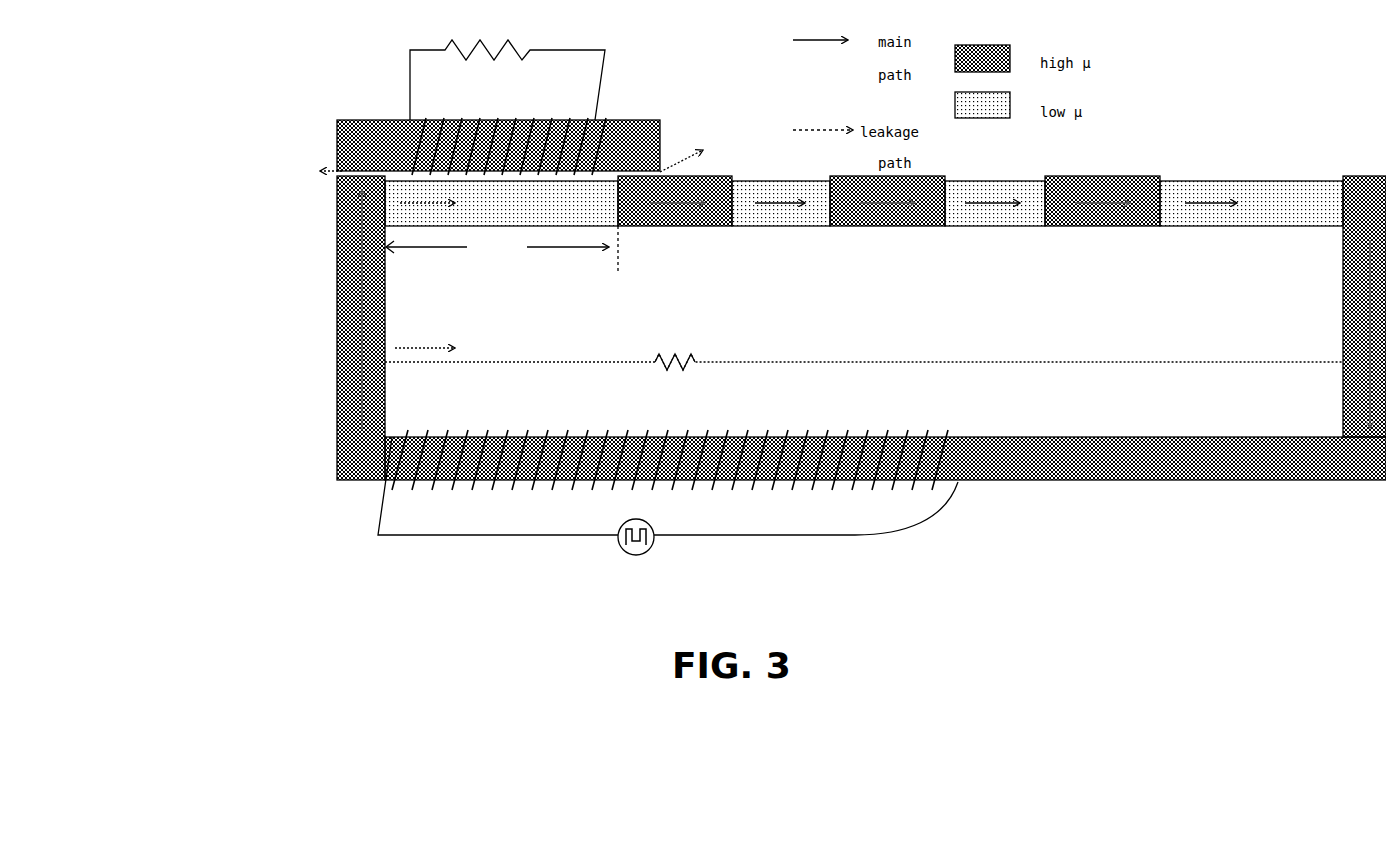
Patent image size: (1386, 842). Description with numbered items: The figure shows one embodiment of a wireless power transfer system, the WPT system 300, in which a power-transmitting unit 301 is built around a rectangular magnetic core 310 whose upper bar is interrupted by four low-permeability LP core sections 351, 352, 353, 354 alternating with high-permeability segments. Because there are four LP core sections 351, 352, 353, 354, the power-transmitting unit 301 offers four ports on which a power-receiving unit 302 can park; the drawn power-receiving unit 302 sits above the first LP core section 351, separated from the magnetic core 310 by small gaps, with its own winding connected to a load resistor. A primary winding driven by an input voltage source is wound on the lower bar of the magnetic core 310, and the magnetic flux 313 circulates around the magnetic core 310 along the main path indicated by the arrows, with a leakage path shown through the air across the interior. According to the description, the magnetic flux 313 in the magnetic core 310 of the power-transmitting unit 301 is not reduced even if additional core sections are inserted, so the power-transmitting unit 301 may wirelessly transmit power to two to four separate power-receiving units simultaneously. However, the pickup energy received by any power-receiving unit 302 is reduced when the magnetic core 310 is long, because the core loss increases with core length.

The WPT system 300 is at (188, 92).
The power-transmitting unit 301 is at (283, 182).
The power-receiving unit 302 is at (283, 100).
The magnetic core 310 is at (333, 417).
The magnetic flux 313 is at (360, 388).
The LP core section 351 is at (548, 208).
The LP core section 352 is at (775, 215).
The LP core section 353 is at (985, 215).
The LP core section 354 is at (1257, 215).